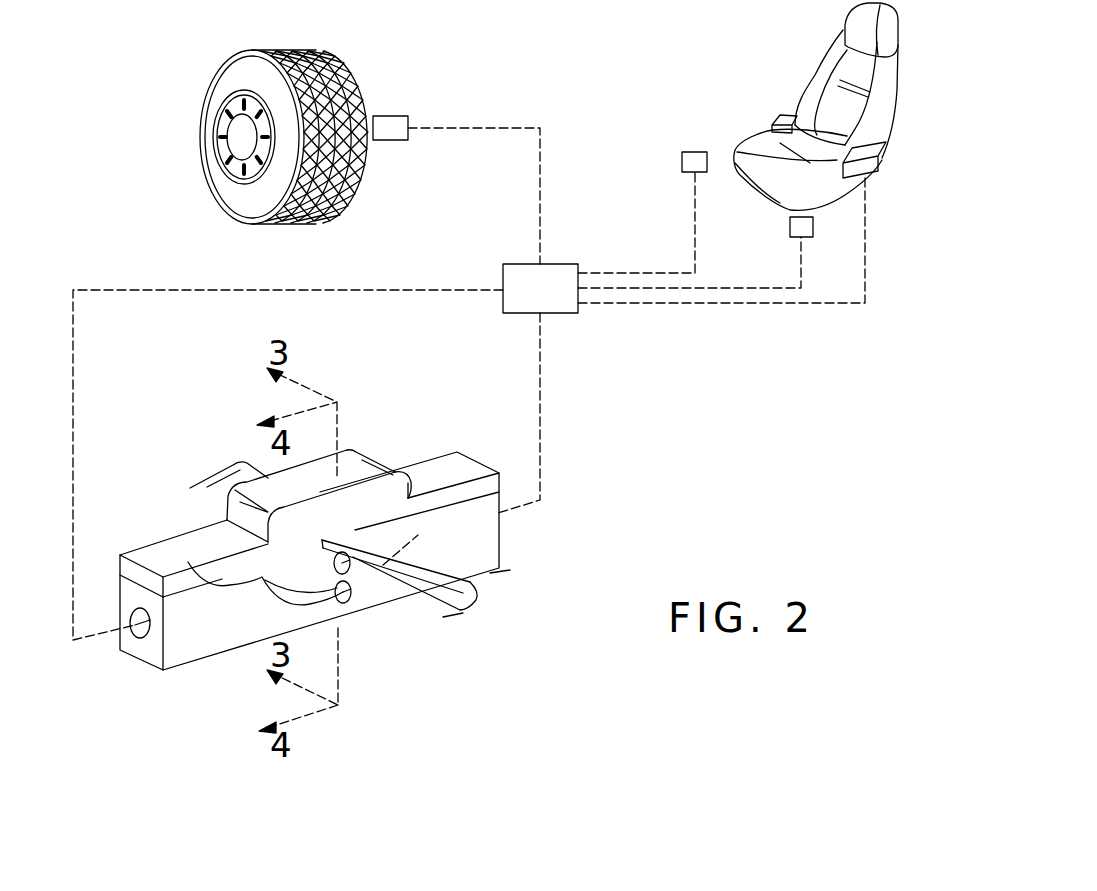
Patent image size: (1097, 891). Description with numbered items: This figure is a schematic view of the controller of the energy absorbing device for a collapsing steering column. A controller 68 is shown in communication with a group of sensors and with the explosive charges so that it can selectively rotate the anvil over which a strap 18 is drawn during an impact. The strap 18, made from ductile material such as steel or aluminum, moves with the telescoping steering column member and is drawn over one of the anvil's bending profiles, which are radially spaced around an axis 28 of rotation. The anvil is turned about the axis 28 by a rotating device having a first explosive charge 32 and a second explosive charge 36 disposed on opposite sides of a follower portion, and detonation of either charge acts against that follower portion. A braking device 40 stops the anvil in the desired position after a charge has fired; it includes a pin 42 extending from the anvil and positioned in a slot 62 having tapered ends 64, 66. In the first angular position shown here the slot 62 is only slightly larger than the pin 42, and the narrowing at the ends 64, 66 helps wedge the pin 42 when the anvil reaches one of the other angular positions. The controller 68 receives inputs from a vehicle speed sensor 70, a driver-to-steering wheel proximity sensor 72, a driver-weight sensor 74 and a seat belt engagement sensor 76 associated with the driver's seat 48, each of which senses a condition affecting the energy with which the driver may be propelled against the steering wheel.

The strap 18 is at (483, 590).
The axis of rotation 28 is at (348, 560).
The first explosive charge 32 is at (115, 641).
The second explosive charge 36 is at (516, 540).
The braking device 40 is at (355, 615).
The pin 42 is at (351, 595).
The seat 48 is at (888, 85).
The slot 62 is at (282, 597).
The tapered end 64 is at (222, 576).
The tapered end 66 is at (418, 535).
The controller 68 is at (568, 303).
The vehicle speed sensor 70 is at (397, 120).
The driver-to-steering wheel proximity sensor 72 is at (695, 153).
The driver-weight sensor 74 is at (790, 228).
The seat belt engagement sensor 76 is at (870, 172).